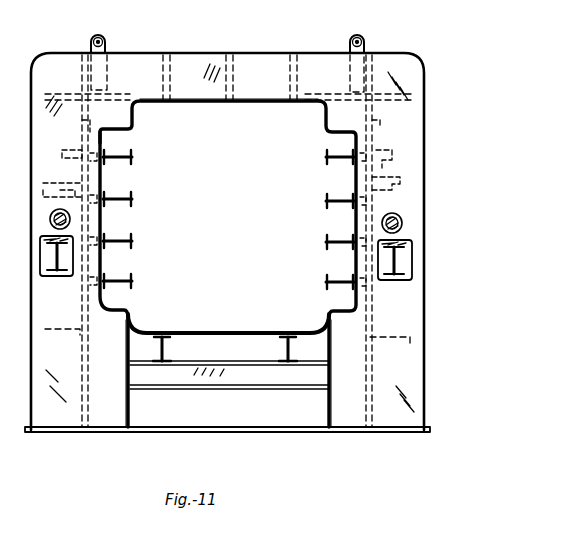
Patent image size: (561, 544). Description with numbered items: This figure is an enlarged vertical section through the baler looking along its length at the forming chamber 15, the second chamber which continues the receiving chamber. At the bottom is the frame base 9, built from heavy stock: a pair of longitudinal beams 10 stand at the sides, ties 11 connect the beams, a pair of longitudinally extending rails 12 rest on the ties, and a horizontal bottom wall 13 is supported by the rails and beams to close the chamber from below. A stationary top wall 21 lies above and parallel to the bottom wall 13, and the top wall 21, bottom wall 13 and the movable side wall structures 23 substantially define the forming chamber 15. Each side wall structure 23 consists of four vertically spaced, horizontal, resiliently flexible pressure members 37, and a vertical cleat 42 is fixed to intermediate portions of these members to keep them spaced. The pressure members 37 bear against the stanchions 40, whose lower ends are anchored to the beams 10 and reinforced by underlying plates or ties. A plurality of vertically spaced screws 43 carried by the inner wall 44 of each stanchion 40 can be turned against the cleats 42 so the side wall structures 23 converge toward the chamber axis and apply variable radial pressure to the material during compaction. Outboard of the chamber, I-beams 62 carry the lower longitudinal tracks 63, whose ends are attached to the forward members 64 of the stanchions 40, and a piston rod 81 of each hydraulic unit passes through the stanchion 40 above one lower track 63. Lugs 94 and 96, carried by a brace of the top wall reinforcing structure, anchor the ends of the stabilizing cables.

The base 9 is at (237, 428).
The longitudinal beams 10 is at (130, 407).
The ties 11 is at (290, 382).
The longitudinally extending rails 12 is at (165, 351).
The bottom wall 13 is at (245, 334).
The forming chamber 15 is at (253, 137).
The top wall 21 is at (218, 106).
The movable side wall structures 23 is at (332, 188).
The pressure members 37 is at (133, 192).
The stanchions 40 is at (386, 53).
The vertical cleat 42 is at (105, 218).
The screws 43 is at (68, 147).
The inner wall 44 is at (91, 125).
The I-beams 62 is at (57, 253).
The lower longitudinal tracks 63 is at (52, 237).
The forward members 64 is at (42, 309).
The piston rod 81 is at (50, 214).
The lug 94 is at (350, 44).
The lug 96 is at (106, 42).